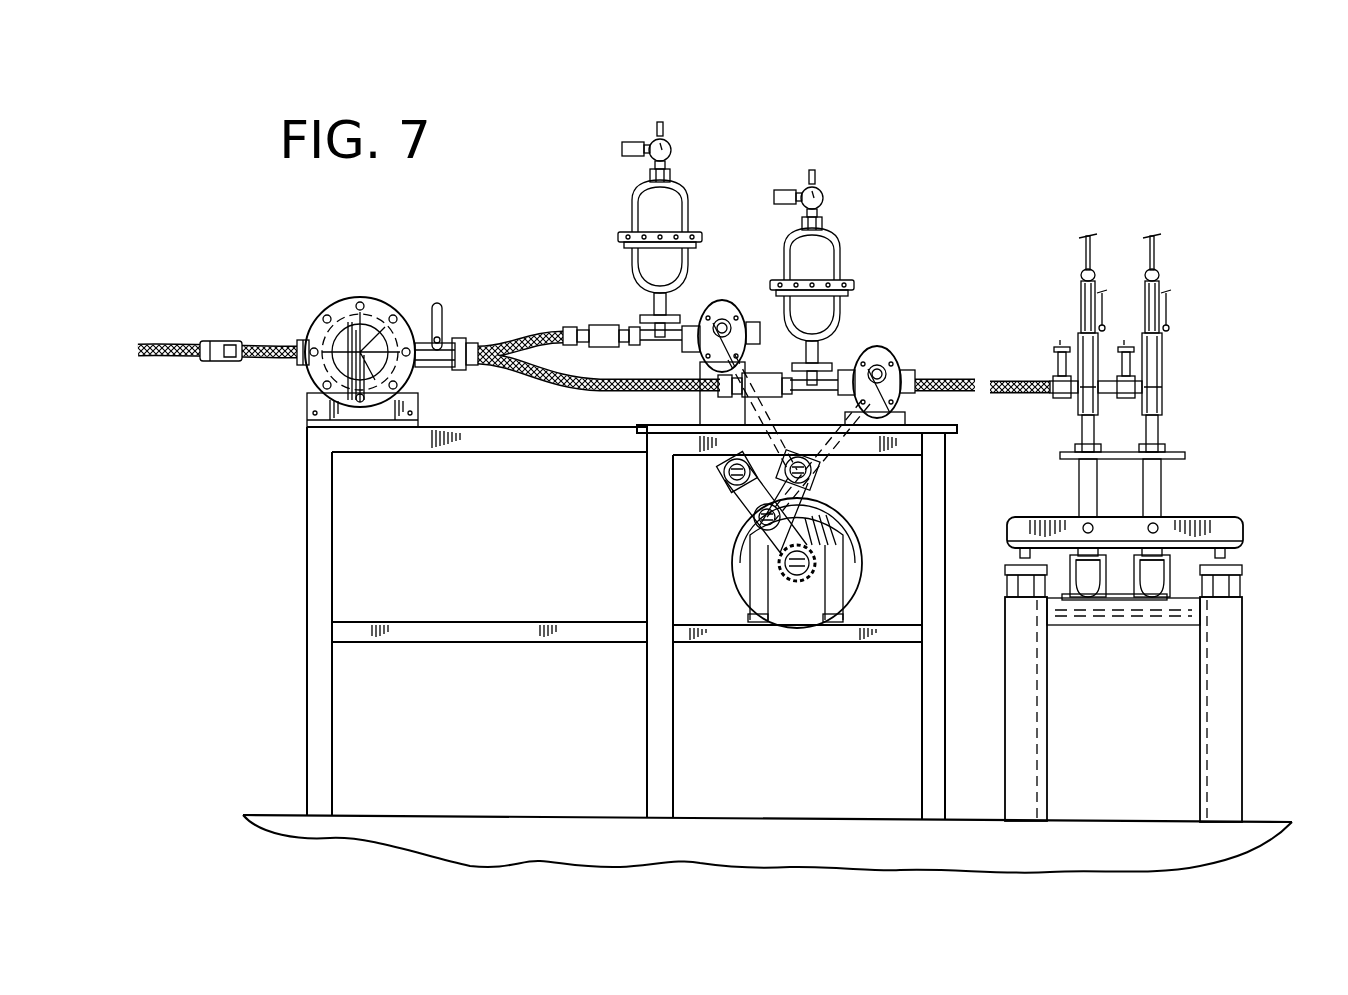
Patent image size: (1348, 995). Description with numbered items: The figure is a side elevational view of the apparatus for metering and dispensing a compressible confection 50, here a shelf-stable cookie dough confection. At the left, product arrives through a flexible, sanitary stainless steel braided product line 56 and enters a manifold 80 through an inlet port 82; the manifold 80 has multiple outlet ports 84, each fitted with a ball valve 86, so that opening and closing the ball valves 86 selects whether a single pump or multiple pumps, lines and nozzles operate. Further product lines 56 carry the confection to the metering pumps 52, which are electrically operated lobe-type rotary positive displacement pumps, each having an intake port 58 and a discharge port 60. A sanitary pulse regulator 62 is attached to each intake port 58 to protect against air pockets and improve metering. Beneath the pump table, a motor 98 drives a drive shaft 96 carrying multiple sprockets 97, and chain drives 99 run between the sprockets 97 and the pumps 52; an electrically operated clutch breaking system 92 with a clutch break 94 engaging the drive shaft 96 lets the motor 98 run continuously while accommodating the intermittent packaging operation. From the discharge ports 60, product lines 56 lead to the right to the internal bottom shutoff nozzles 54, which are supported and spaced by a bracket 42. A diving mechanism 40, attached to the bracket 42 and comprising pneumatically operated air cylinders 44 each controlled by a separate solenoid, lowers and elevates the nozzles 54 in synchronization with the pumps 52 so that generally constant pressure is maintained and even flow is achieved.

The diving mechanism 40 is at (1264, 529).
The bracket 42 is at (1188, 514).
The air cylinder 44 is at (1002, 580).
The apparatus for metering and dispensing a compressible confection 50 is at (1303, 118).
The metering pump 52 is at (728, 298).
The internal bottom shutoff nozzle 54 is at (1093, 280).
The product line 56 is at (158, 338).
The intake port 58 is at (690, 322).
The discharge port 60 is at (758, 320).
The pulse regulator 62 is at (626, 214).
The manifold 80 is at (362, 293).
The inlet port 82 is at (301, 338).
The outlet port 84 is at (414, 338).
The ball valve 86 is at (447, 333).
The clutch breaking system 92 is at (882, 527).
The clutch break 94 is at (732, 497).
The drive shaft 96 is at (797, 580).
The sprockets 97 is at (785, 562).
The motor 98 is at (861, 588).
The chain drives 99 is at (800, 524).